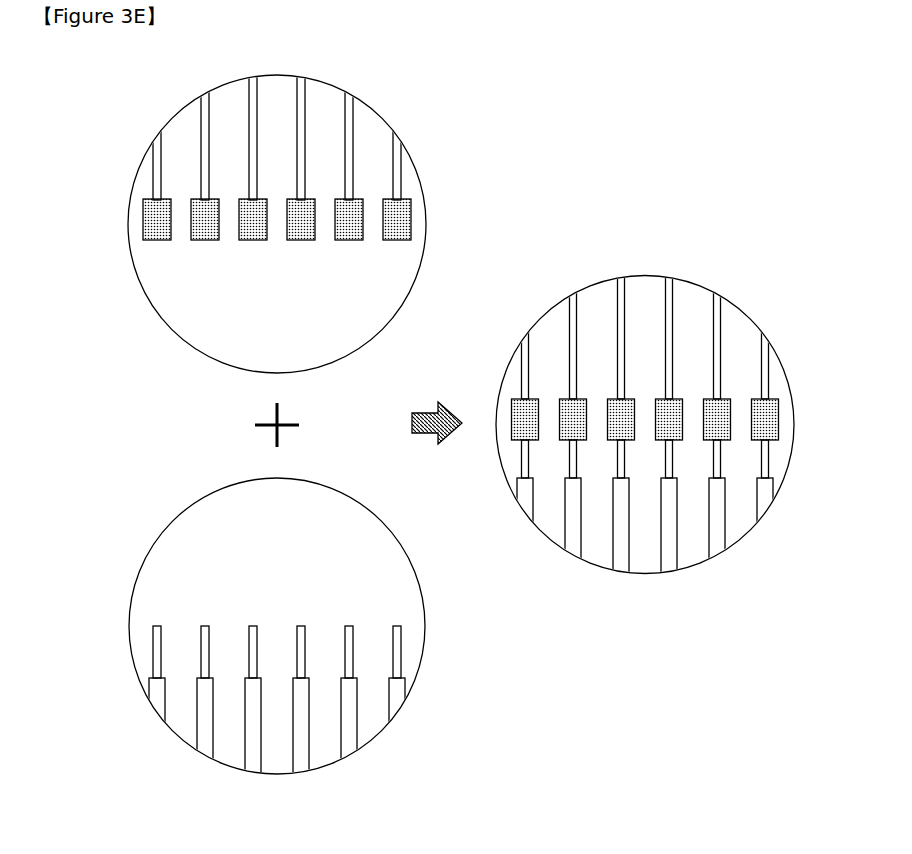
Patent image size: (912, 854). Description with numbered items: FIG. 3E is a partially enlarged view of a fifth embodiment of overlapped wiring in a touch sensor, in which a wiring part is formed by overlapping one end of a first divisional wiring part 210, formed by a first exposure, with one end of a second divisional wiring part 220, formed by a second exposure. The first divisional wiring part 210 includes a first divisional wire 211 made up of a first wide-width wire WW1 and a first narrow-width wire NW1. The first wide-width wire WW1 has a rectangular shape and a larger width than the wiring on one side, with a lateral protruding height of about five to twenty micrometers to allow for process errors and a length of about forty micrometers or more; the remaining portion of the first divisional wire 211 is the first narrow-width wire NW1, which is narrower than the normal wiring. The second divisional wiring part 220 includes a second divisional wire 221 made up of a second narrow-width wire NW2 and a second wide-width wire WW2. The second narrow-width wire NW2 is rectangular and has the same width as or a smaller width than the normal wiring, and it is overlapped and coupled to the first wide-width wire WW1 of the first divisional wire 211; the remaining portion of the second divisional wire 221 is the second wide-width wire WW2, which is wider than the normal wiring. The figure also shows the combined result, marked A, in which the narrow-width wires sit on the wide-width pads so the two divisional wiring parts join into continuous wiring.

The first divisional wiring part 210 is at (172, 112).
The first divisional wire 211 is at (357, 150).
The first narrow-width wire NW1 is at (401, 178).
The first wide-width wire WW1 is at (409, 222).
The second divisional wiring part 220 is at (172, 737).
The second divisional wire 221 is at (360, 705).
The second narrow-width wire NW2 is at (401, 640).
The second wide-width wire WW2 is at (405, 688).
The bonded region A is at (739, 142).